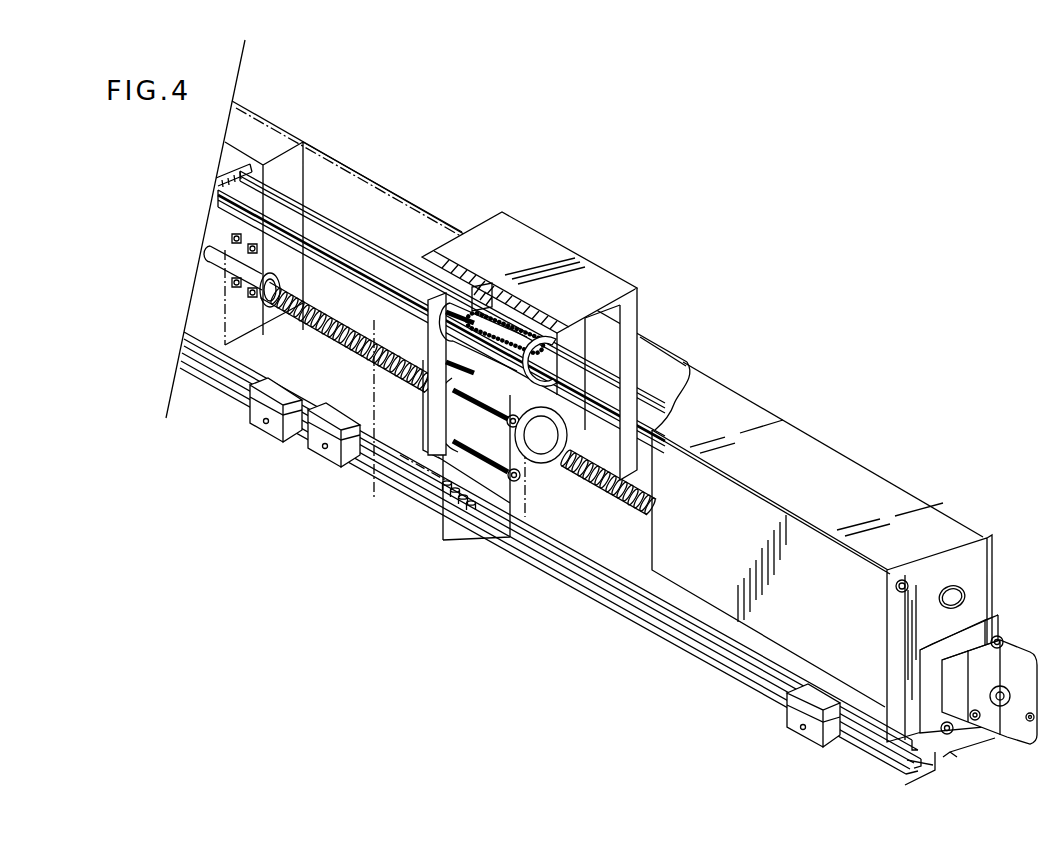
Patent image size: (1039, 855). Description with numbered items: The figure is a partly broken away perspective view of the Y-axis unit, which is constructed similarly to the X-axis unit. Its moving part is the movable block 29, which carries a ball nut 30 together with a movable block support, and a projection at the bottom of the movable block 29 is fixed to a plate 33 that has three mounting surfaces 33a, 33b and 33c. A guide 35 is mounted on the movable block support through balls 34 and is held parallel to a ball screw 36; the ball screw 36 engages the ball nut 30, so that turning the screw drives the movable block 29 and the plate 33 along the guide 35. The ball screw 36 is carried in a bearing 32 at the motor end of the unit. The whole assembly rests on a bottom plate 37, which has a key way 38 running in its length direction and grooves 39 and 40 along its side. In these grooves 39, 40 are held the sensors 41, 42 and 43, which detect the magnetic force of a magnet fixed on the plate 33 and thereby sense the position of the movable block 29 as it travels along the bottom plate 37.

The movable block 29 is at (578, 347).
The ball nut 30 is at (457, 440).
The bearing 32 is at (568, 462).
The plate 33 is at (528, 257).
The mounting surface 33a is at (398, 437).
The mounting surface 33b is at (563, 270).
The mounting surface 33c is at (635, 377).
The balls 34 is at (488, 308).
The guide 35 is at (585, 380).
The ball screw 36 is at (613, 490).
The bottom plate 37 is at (248, 125).
The key way 38 is at (956, 755).
The groove 39 is at (895, 763).
The groove 40 is at (867, 735).
The sensor 41 is at (255, 422).
The sensor 42 is at (315, 458).
The sensor 43 is at (797, 733).